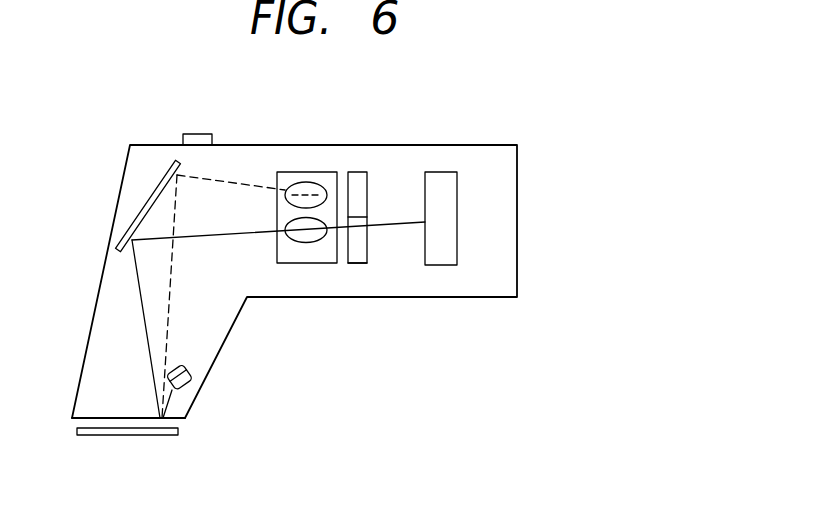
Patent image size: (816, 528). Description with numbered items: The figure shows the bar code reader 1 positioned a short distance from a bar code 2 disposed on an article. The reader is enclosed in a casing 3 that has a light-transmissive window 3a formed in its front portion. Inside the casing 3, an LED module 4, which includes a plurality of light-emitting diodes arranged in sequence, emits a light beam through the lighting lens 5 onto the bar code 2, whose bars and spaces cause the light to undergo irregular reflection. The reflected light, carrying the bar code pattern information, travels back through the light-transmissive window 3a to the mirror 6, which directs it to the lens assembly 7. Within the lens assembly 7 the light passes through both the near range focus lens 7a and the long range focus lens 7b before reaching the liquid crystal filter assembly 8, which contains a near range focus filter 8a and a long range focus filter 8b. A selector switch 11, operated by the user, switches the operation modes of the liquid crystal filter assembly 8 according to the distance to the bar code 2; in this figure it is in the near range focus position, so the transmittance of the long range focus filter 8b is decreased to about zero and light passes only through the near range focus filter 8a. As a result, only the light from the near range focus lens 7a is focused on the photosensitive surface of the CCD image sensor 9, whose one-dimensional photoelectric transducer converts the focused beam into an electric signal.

The bar code reader 1 is at (268, 271).
The bar code 2 is at (180, 432).
The casing 3 is at (505, 143).
The light-transmissive window 3a is at (73, 418).
The LED module 4 is at (186, 366).
The lighting lens 5 is at (185, 392).
The mirror 6 is at (145, 200).
The lens assembly 7 is at (305, 219).
The near range focus lens 7a is at (312, 243).
The long range focus lens 7b is at (315, 182).
The liquid crystal filter assembly 8 is at (376, 221).
The near range focus filter 8a is at (358, 255).
The long range focus filter 8b is at (358, 178).
The CCD image sensor 9 is at (448, 172).
The selector switch 11 is at (203, 134).